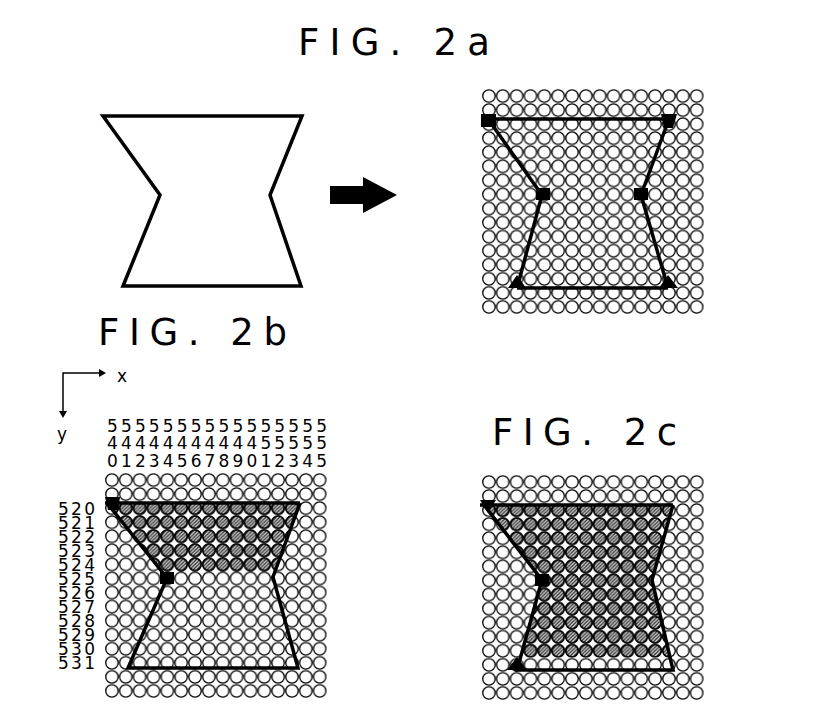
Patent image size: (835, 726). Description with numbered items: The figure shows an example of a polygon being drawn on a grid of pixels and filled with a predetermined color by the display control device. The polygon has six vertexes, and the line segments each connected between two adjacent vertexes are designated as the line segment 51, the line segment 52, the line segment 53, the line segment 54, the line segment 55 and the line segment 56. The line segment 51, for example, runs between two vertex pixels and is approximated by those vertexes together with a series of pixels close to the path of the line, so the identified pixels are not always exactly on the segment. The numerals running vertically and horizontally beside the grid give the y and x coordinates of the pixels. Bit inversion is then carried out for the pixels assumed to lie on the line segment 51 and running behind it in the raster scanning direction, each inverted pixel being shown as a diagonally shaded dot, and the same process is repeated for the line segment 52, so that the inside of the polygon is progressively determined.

The line segment 51 is at (507, 165).
The line segment 52 is at (507, 238).
The line segment 53 is at (601, 290).
The line segment 54 is at (665, 250).
The line segment 55 is at (665, 152).
The line segment 56 is at (600, 117).